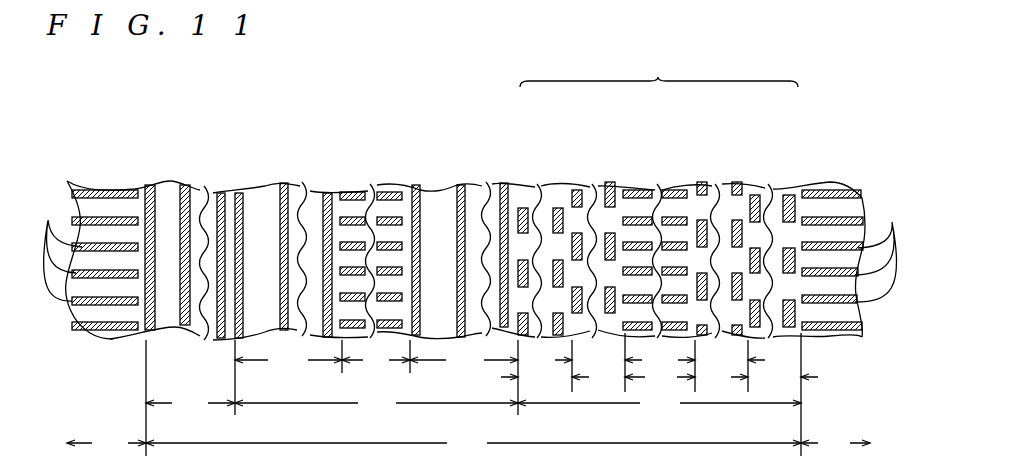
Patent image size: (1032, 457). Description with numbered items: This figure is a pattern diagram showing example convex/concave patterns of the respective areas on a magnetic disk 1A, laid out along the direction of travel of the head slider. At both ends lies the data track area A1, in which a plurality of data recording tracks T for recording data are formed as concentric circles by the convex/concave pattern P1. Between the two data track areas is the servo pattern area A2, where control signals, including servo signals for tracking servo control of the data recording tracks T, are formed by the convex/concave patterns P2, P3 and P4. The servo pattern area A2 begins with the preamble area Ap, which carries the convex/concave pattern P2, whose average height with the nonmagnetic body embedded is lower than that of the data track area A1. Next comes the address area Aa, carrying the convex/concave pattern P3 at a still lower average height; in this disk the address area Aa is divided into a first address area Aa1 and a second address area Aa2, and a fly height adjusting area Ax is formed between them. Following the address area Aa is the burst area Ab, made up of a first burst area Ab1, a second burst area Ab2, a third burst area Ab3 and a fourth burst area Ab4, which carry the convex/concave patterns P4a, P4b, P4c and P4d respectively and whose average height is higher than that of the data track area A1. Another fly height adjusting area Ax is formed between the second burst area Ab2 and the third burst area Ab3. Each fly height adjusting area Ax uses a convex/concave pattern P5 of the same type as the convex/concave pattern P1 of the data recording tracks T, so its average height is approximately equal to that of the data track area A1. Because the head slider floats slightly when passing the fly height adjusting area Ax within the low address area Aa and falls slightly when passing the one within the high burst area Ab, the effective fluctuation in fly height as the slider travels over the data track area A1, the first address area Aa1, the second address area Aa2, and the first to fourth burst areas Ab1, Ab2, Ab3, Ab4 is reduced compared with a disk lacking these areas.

The magnetic disk 1A is at (371, 64).
The convex/concave pattern P1 is at (100, 173).
The convex/concave pattern P2 is at (182, 173).
The convex/concave pattern P3 is at (284, 173).
The convex/concave pattern P4 is at (659, 68).
The convex/concave pattern P4a is at (547, 175).
The convex/concave pattern P4b is at (595, 172).
The convex/concave pattern P4c is at (720, 172).
The convex/concave pattern P4d is at (775, 172).
The convex/concave pattern P5 is at (375, 174).
The data recording track T is at (469, 247).
The data track area A1 is at (468, 443).
The servo pattern area A2 is at (473, 443).
The preamble area Ap is at (190, 398).
The address area Aa is at (376, 378).
The burst area Ab is at (659, 394).
The first address area Aa1 is at (288, 360).
The second address area Aa2 is at (464, 360).
The fly height adjusting area Ax is at (518, 365).
The first burst area Ab1 is at (545, 377).
The second burst area Ab2 is at (598, 362).
The third burst area Ab3 is at (721, 366).
The fourth burst area Ab4 is at (774, 377).